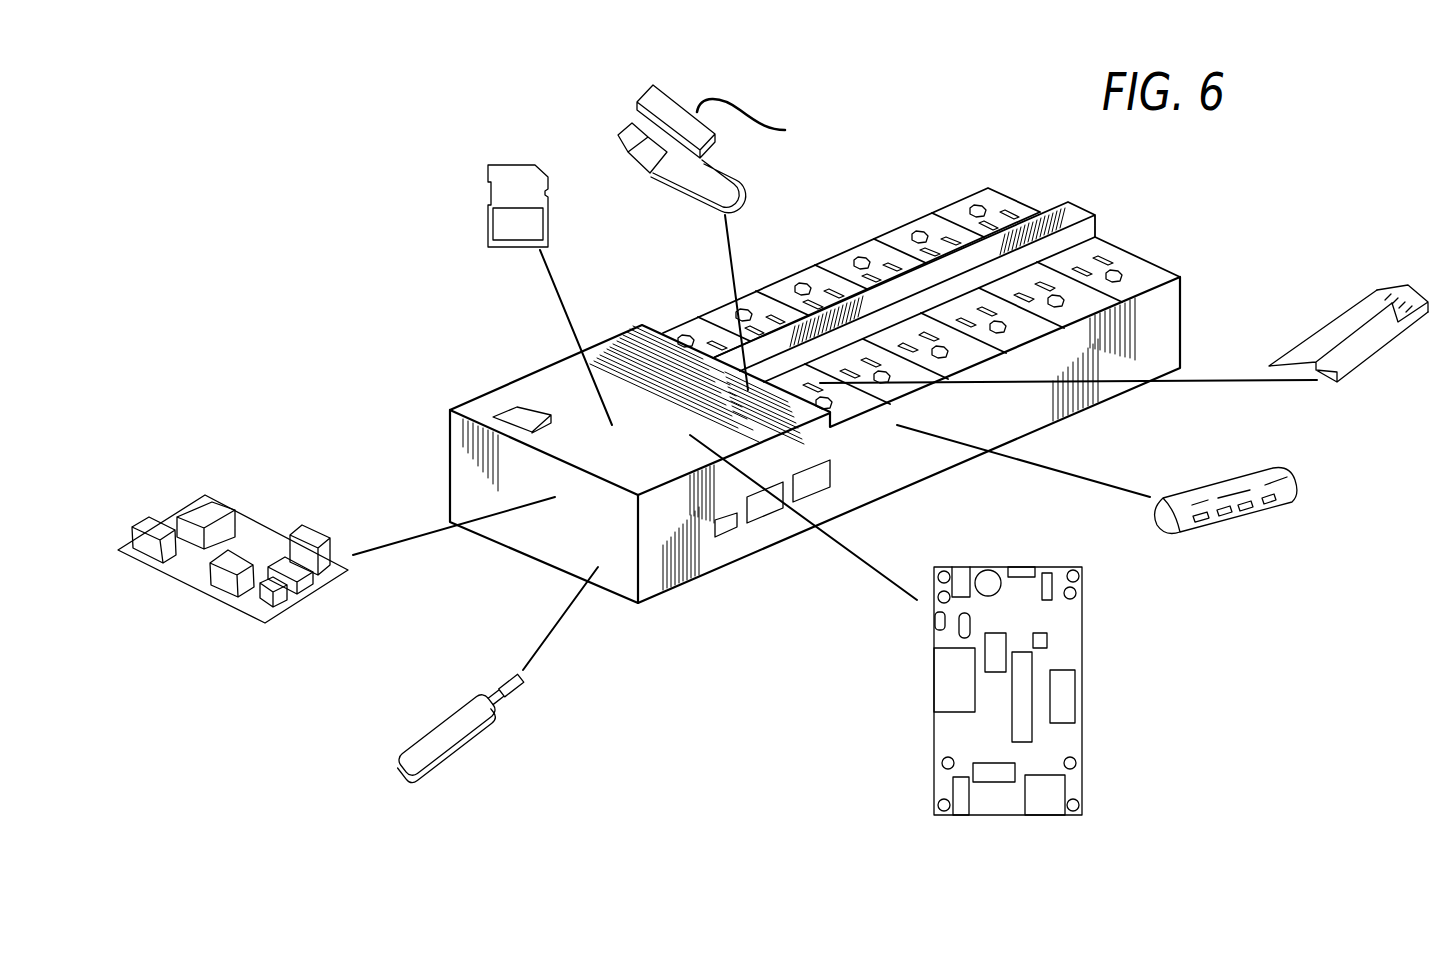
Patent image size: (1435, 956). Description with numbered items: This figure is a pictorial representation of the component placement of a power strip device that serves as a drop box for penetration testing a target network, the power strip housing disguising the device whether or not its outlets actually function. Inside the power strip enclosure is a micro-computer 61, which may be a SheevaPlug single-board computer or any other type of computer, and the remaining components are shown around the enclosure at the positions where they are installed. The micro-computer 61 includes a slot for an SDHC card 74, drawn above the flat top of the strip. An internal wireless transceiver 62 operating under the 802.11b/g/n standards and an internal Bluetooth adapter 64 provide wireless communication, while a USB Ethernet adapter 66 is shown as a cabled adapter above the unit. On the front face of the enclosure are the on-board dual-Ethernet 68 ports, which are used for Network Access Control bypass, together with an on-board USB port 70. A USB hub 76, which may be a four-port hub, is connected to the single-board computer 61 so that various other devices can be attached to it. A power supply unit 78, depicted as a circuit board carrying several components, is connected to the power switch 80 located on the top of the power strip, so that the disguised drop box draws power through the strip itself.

The micro-computer 61 is at (1082, 680).
The wireless transceiver 62 is at (1380, 348).
The Bluetooth adapter 64 is at (452, 742).
The USB Ethernet adapter 66 is at (715, 237).
The on-board dual-Ethernet 68 is at (763, 503).
The on-board USB port 70 is at (730, 527).
The SDHC card 74 is at (488, 180).
The USB hub 76 is at (1247, 513).
The power supply unit 78 is at (203, 510).
The power switch 80 is at (513, 417).